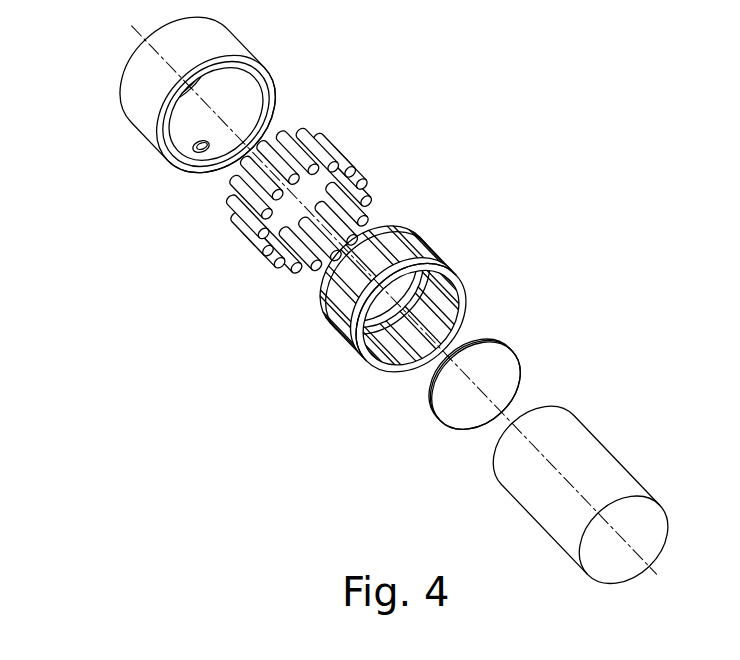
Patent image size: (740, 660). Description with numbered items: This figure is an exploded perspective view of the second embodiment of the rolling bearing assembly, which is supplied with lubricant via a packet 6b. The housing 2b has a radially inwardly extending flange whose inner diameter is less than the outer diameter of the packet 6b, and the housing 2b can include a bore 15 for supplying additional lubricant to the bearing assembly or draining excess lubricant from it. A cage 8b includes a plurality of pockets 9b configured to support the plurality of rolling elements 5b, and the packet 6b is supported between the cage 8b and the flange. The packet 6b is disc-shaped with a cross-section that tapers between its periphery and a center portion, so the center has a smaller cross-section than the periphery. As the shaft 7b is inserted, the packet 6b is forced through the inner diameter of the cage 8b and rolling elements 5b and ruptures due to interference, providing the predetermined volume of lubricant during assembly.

The housing 2b is at (116, 92).
The bore 15 is at (196, 150).
The rolling elements 5b is at (322, 140).
The cage 8b is at (363, 321).
The pockets 9b is at (323, 300).
The packet 6b is at (500, 367).
The shaft 7b is at (590, 460).